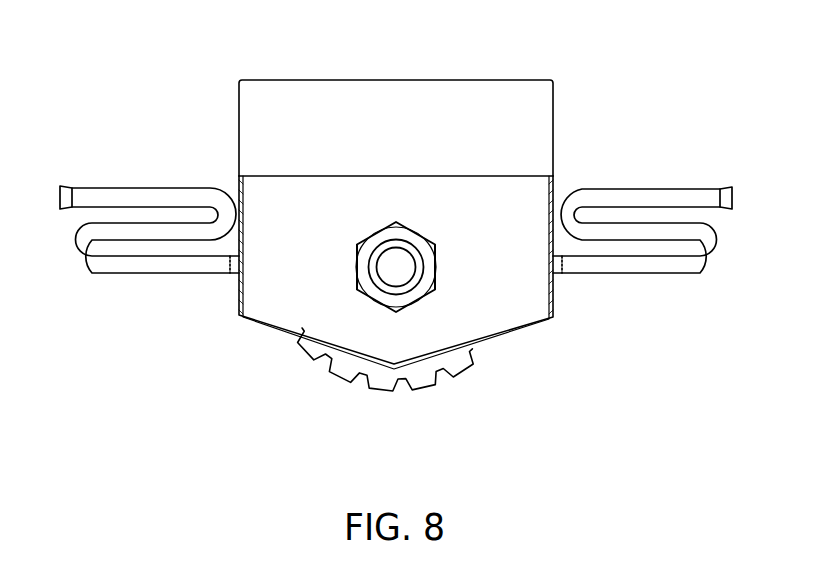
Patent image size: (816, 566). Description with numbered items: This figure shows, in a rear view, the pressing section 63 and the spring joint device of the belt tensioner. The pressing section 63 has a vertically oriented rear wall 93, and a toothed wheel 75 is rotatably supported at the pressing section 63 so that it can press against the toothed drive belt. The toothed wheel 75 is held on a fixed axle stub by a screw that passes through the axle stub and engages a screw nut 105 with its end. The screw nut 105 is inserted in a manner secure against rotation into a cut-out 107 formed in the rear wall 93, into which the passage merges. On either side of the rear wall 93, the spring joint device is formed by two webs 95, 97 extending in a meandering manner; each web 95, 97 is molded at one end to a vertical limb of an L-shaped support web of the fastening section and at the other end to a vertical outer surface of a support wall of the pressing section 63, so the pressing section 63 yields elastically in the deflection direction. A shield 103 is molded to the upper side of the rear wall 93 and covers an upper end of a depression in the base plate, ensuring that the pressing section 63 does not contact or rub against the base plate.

The pressing section 63 is at (157, 341).
The toothed wheel 75 is at (472, 362).
The rear wall 93 is at (277, 278).
The web extending in a meandering manner 95 is at (653, 193).
The web extending in a meandering manner 97 is at (138, 195).
The shield 103 is at (267, 138).
The screw nut 105 is at (425, 276).
The cut-out 107 is at (418, 226).